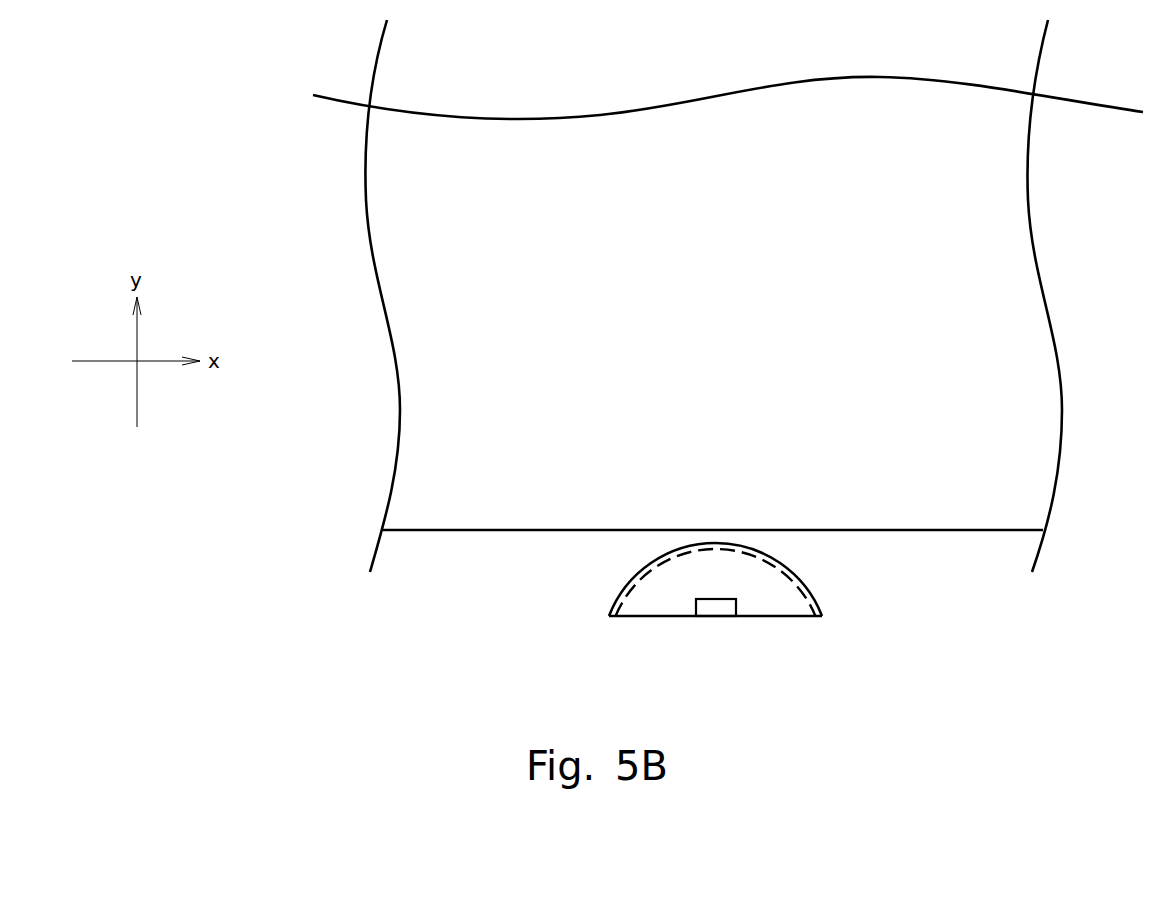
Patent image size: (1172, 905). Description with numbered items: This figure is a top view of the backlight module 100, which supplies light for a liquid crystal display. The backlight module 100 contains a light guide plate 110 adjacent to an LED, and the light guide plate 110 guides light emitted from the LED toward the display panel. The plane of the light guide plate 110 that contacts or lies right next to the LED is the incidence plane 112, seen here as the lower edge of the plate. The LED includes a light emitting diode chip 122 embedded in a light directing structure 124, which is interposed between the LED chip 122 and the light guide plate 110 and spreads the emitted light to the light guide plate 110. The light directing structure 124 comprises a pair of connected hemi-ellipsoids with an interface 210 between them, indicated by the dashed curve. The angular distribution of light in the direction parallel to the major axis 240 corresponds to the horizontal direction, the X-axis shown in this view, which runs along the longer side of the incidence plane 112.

The backlight module 100 is at (219, 69).
The light guide plate 110 is at (425, 205).
The incidence plane 112 is at (520, 530).
The light emitting diode chip 122 is at (718, 608).
The light directing structure 124 is at (812, 586).
The interface 210 is at (623, 598).
The major axis 240 is at (659, 618).